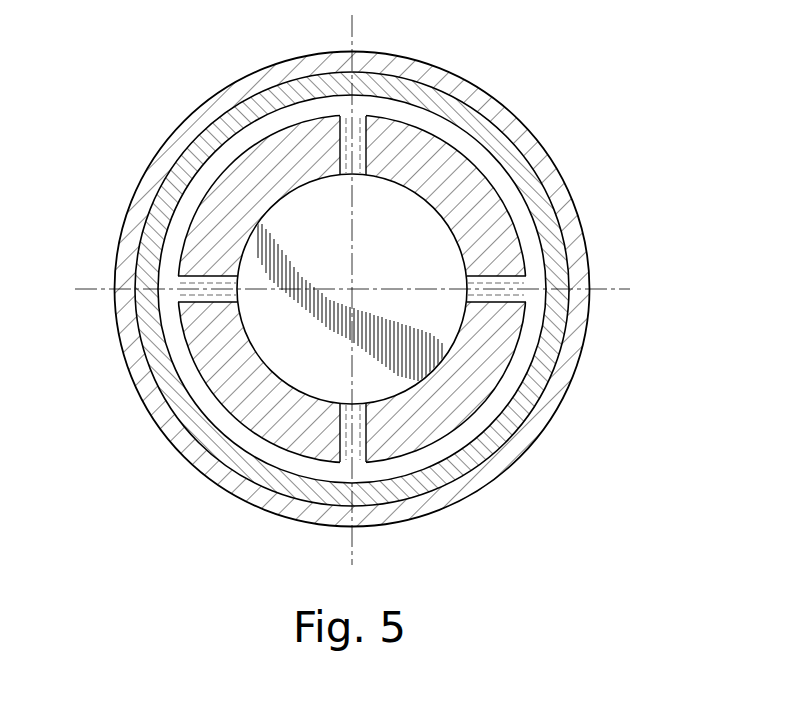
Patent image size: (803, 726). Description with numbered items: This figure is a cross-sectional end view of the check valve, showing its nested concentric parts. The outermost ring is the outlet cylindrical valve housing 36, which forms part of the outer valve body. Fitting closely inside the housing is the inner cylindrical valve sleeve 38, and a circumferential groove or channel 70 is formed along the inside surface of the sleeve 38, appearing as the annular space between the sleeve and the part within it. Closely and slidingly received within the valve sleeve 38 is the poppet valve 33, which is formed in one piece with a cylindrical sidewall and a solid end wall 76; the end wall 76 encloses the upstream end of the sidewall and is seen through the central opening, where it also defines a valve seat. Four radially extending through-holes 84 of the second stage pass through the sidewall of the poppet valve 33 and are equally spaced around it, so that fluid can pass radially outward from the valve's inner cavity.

The poppet valve 33 is at (448, 162).
The valve housing 36 is at (503, 457).
The valve sleeve 38 is at (535, 388).
The circumferential groove 70 is at (523, 226).
The end wall 76 is at (410, 265).
The through-holes 84 is at (362, 125).